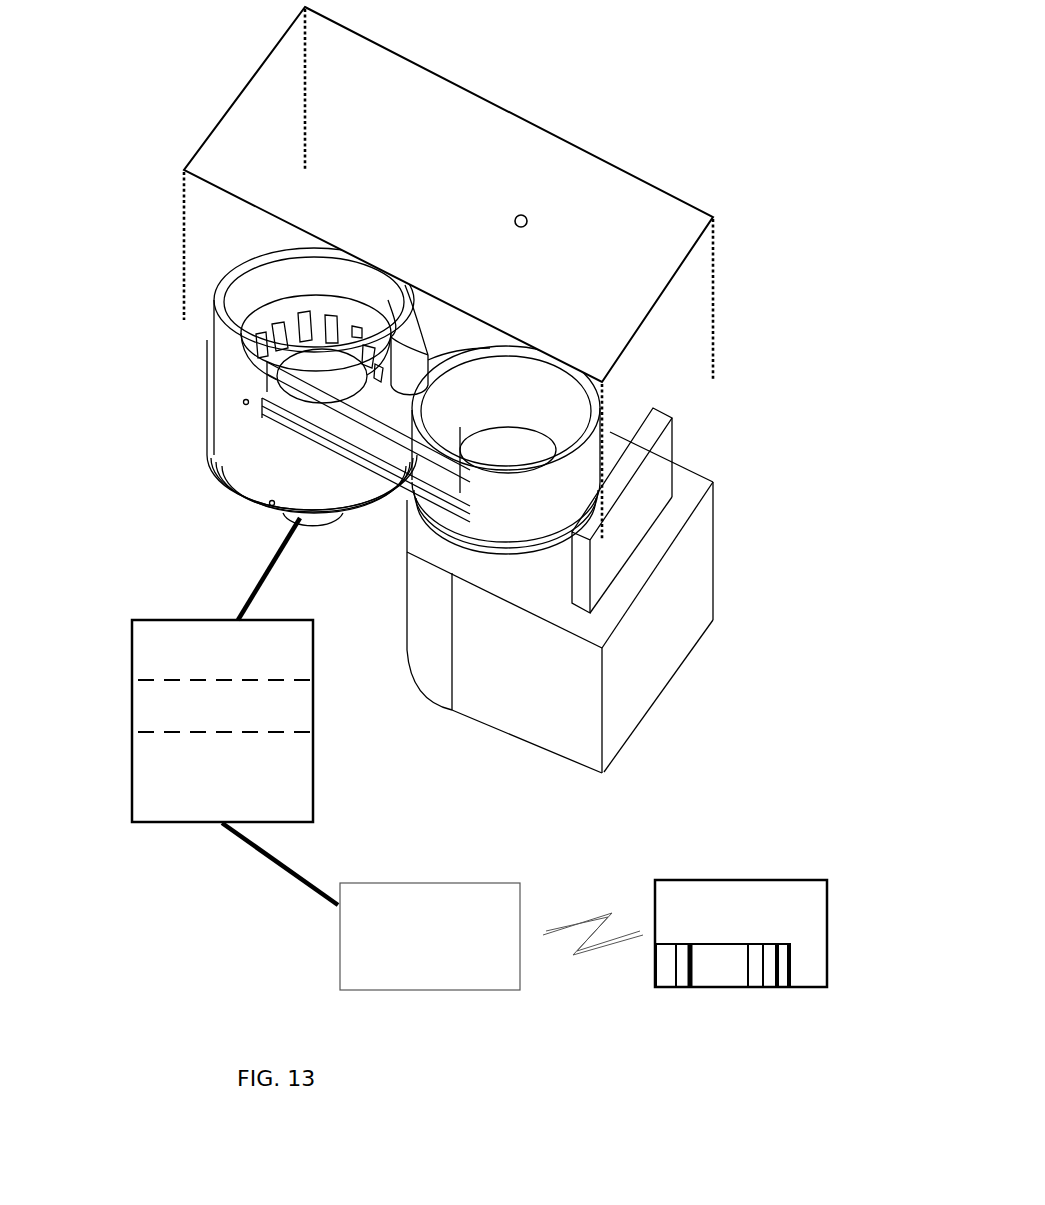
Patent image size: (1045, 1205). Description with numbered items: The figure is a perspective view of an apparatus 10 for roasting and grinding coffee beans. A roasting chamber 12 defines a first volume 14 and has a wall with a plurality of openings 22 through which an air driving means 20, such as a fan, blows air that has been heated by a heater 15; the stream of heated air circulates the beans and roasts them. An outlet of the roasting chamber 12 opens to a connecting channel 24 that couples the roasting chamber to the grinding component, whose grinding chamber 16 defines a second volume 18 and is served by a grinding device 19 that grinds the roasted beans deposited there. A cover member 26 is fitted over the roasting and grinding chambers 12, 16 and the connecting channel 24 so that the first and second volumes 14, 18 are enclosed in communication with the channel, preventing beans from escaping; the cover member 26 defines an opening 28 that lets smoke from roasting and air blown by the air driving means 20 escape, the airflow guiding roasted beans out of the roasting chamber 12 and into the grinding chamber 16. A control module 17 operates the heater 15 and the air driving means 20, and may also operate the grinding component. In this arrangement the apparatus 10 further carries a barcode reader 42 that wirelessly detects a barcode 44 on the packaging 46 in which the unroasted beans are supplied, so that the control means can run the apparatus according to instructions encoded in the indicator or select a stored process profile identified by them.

The apparatus 10 is at (646, 114).
The roasting chamber 12 is at (255, 252).
The first volume 14 is at (334, 280).
The heater 15 is at (130, 712).
The grinding chamber 16 is at (453, 423).
The control module 17 is at (130, 790).
The second volume 18 is at (560, 392).
The grinding device 19 is at (673, 613).
The air driving means 20 is at (132, 637).
The openings 22 is at (277, 333).
The connecting channel 24 is at (390, 403).
The cover member 26 is at (497, 163).
The opening 28 is at (527, 220).
The barcode reader 42 is at (467, 990).
The barcode 44 is at (656, 989).
The packaging 46 is at (707, 880).